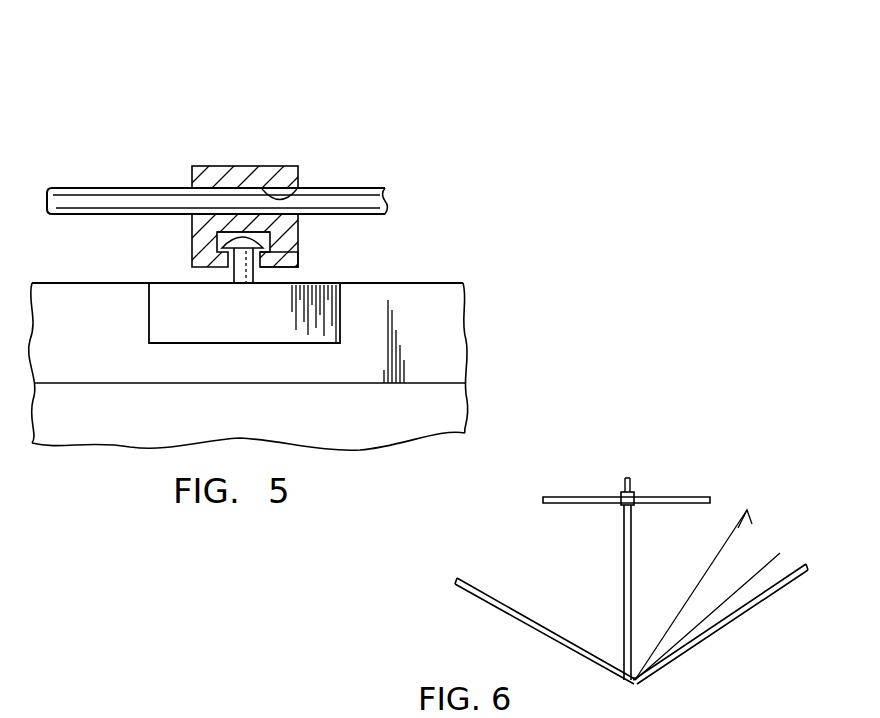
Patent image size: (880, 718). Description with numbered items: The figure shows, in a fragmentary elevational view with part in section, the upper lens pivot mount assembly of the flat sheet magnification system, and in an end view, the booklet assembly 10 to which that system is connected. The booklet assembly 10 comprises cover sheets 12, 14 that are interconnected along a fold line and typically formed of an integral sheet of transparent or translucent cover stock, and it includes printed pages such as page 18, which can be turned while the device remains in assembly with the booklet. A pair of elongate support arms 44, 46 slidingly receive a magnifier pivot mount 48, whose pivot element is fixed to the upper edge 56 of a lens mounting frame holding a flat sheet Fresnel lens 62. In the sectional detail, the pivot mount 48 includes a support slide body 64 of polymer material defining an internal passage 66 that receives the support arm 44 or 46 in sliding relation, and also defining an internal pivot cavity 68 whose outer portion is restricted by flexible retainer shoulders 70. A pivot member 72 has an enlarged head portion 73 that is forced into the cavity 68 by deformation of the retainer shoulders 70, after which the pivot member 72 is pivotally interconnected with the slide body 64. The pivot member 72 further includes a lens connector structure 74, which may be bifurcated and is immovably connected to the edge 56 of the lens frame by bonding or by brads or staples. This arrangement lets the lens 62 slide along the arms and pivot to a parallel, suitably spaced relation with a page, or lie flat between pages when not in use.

In FIG. 6, the booklet assembly 10 is at (643, 436).
In FIG. 6, the cover sheet 12 is at (524, 625).
In FIG. 6, the cover sheet 14 is at (753, 602).
In FIG. 6, the printed page 18 is at (750, 545).
In FIG. 5, the elongate support arm 44 is at (75, 196).
In FIG. 6, the elongate support arm 46 is at (624, 583).
In FIG. 5, the magnifier pivot mount 48 is at (288, 152).
In FIG. 6, the magnifier pivot mount 48 is at (621, 497).
In FIG. 5, the upper edge of lens mounting frame 56 is at (67, 305).
In FIG. 6, the upper edge of lens mounting frame 56 is at (670, 497).
In FIG. 5, the Fresnel lens 62 is at (448, 408).
In FIG. 5, the support slide body 64 is at (198, 165).
In FIG. 5, the internal passage 66 is at (305, 189).
In FIG. 5, the internal pivot cavity 68 is at (265, 234).
In FIG. 5, the flexible retainer shoulder 70 is at (208, 272).
In FIG. 5, the pivot member 72 is at (283, 273).
In FIG. 5, the enlarged head portion 73 is at (222, 228).
In FIG. 5, the lens connector structure 74 is at (340, 310).